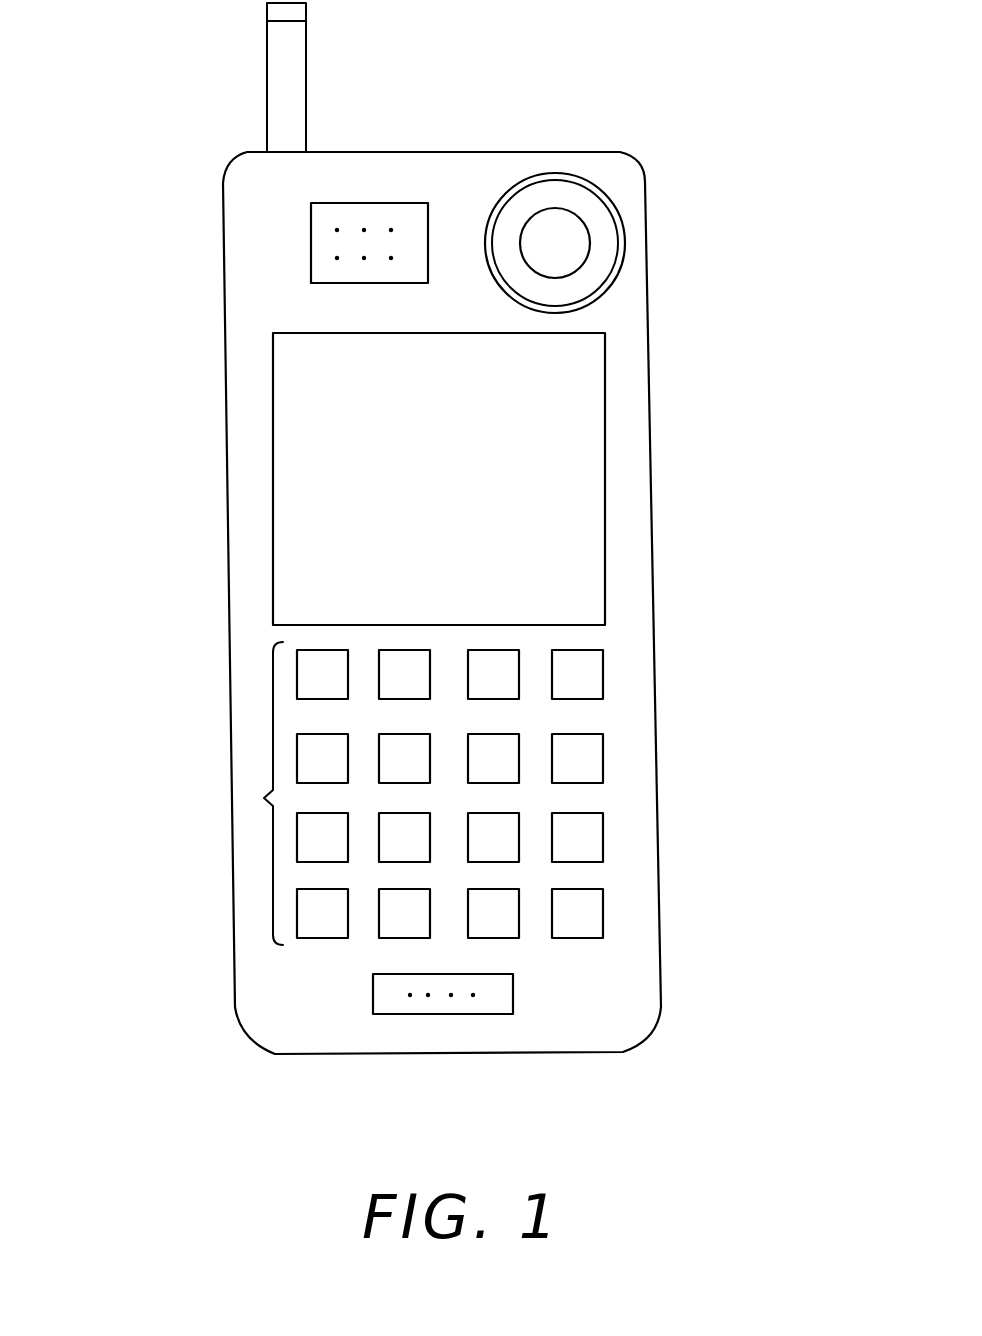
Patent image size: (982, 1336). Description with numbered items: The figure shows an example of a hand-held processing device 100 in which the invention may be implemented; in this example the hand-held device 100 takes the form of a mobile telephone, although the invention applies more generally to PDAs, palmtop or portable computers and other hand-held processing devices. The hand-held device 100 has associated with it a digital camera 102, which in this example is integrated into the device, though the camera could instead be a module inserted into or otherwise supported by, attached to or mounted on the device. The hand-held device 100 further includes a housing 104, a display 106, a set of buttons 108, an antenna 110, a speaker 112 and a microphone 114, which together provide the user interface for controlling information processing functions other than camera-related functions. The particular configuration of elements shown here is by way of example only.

The hand-held processing device 100 is at (427, 528).
The digital camera 102 is at (623, 245).
The housing 104 is at (650, 368).
The display 106 is at (605, 468).
The set of buttons 108 is at (270, 796).
The antenna 110 is at (272, 53).
The speaker 112 is at (320, 245).
The microphone 114 is at (513, 995).